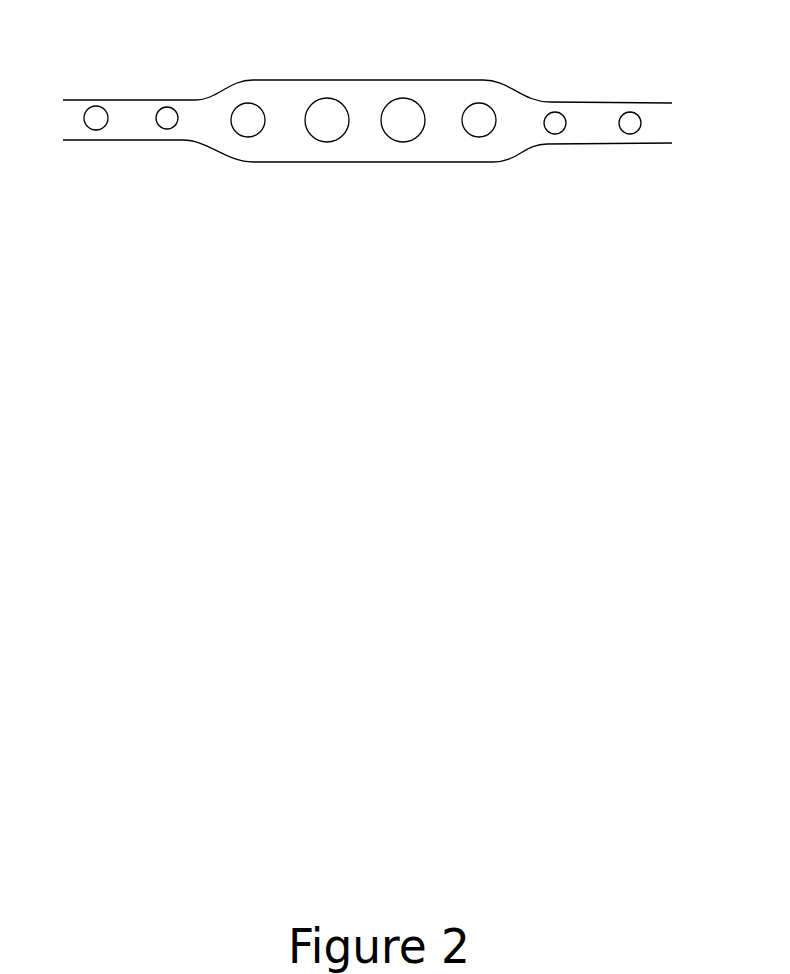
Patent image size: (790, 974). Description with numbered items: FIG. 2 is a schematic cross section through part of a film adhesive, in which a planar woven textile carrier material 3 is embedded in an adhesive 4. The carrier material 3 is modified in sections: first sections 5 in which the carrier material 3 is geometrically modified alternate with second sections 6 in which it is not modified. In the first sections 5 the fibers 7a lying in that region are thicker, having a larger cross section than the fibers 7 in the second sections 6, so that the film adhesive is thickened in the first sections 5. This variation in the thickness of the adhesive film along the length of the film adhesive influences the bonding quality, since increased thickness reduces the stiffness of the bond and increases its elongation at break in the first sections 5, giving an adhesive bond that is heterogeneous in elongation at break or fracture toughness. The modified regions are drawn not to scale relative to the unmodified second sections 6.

The textile carrier material 3 is at (102, 130).
The adhesive 4 is at (593, 128).
The first sections 5 is at (220, 63).
The second sections 6 is at (53, 83).
The holes 7 is at (170, 130).
The fibers 7a is at (322, 142).